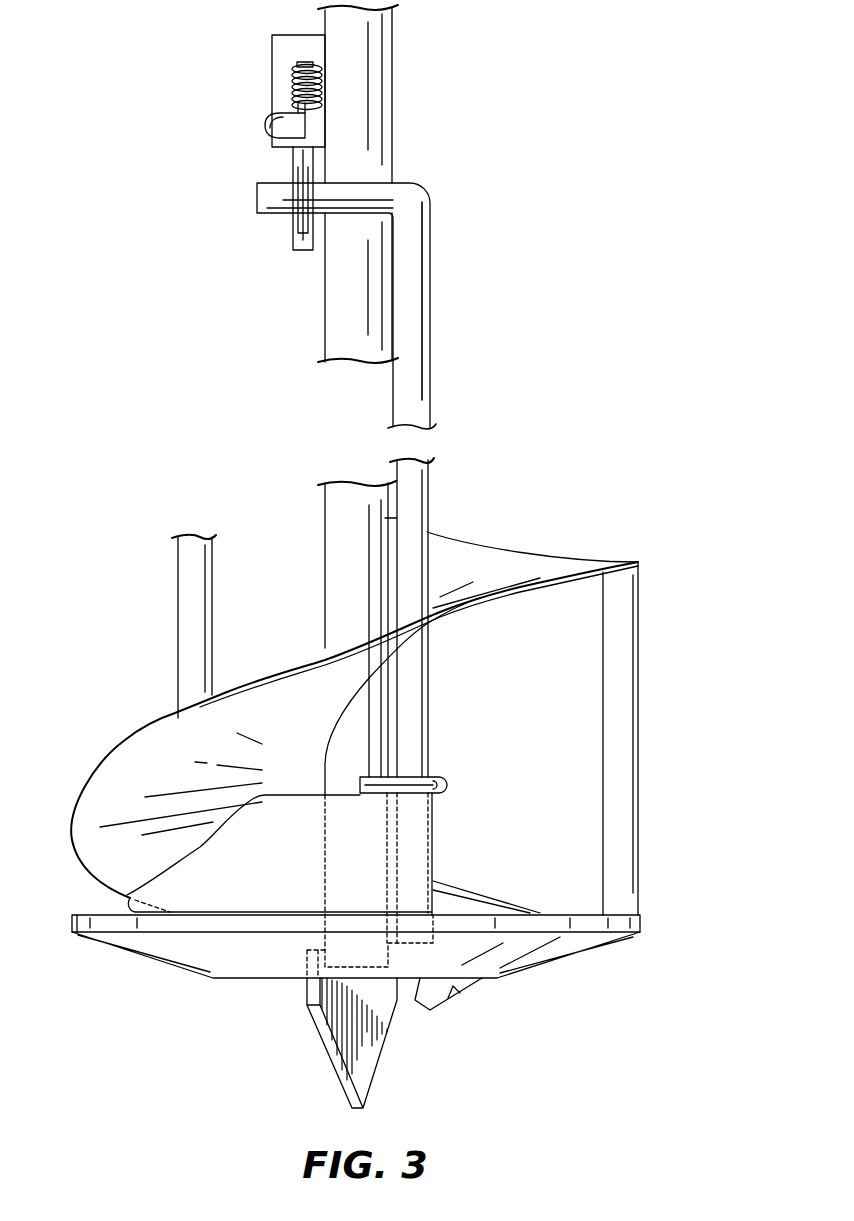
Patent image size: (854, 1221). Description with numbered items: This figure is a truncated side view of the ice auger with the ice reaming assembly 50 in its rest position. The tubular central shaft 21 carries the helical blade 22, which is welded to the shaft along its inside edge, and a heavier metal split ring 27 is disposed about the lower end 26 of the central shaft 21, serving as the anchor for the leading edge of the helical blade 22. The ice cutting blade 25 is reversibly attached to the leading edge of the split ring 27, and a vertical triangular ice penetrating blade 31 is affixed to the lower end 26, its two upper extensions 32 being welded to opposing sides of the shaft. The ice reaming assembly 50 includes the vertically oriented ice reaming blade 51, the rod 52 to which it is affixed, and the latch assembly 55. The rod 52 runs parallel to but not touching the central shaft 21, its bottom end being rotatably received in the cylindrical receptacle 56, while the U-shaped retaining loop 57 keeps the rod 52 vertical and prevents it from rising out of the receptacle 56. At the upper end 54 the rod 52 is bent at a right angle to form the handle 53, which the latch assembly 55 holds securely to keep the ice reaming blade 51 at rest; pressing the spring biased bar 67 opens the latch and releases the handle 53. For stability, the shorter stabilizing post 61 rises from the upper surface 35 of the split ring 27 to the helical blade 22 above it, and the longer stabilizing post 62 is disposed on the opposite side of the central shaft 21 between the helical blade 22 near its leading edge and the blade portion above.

The central shaft 21 is at (377, 150).
The helical blade 22 is at (557, 570).
The ice cutting blade 25 is at (440, 997).
The lower end 26 is at (338, 958).
The split ring 27 is at (638, 920).
The ice penetrating blade 31 is at (365, 1067).
The upper extensions 32 is at (312, 962).
The upper surface 35 is at (563, 913).
The ice reaming assembly 50 is at (466, 831).
The ice reaming blade 51 is at (236, 870).
The rod 52 is at (415, 486).
The handle 53 is at (257, 200).
The upper end 54 is at (405, 315).
The latch assembly 55 is at (243, 90).
The cylindrical receptacle 56 is at (430, 933).
The retaining loop 57 is at (441, 775).
The shorter stabilizing post 61 is at (622, 722).
The longer stabilizing post 62 is at (190, 597).
The spring biased bar 67 is at (275, 130).